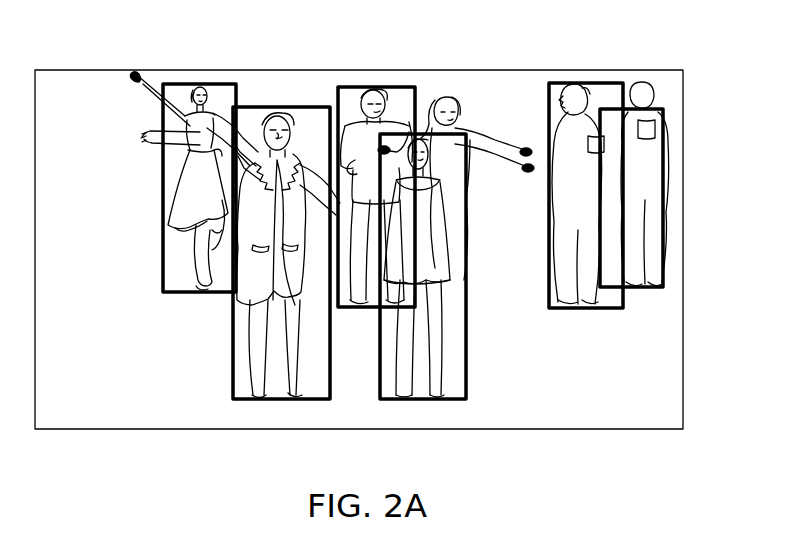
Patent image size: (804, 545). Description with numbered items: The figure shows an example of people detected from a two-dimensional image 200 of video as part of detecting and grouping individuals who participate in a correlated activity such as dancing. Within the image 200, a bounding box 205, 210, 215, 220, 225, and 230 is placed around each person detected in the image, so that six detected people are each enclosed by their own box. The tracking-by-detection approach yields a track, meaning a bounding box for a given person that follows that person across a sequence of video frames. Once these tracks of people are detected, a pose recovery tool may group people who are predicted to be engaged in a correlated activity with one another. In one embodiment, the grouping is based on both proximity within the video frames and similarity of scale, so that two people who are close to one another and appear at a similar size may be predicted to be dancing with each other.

The image 200 is at (673, 97).
The bounding box 205 is at (243, 400).
The bounding box 210 is at (466, 387).
The bounding box 215 is at (592, 308).
The bounding box 220 is at (663, 232).
The bounding box 225 is at (200, 82).
The bounding box 230 is at (373, 87).